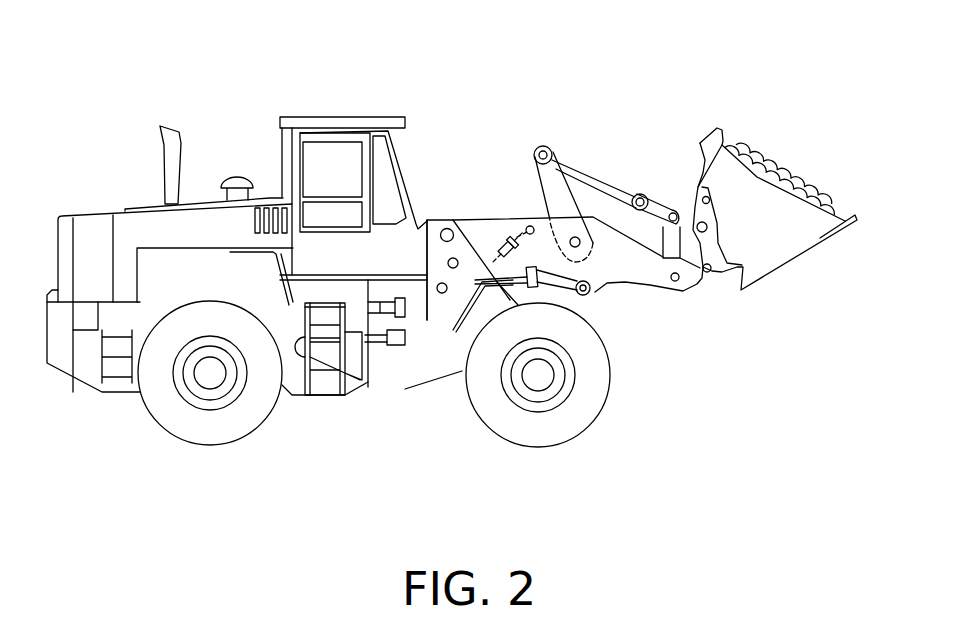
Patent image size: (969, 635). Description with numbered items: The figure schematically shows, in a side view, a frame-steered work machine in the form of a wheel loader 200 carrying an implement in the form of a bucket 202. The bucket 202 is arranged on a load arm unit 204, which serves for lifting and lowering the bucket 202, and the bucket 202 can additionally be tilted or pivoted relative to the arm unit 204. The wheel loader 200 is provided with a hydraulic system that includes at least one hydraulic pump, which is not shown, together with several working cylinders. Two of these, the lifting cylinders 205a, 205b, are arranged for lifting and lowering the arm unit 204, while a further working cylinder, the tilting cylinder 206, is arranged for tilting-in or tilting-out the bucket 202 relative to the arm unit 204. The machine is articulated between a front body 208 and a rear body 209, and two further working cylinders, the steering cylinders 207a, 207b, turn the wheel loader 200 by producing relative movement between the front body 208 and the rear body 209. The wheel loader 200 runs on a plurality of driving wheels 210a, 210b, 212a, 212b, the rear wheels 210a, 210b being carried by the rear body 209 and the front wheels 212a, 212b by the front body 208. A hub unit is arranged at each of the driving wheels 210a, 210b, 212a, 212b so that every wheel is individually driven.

The wheel loader 200 is at (266, 75).
The bucket 202 is at (763, 245).
The load arm unit 204 is at (649, 106).
The lifting cylinder 205a is at (632, 319).
The lifting cylinder 205b is at (560, 287).
The tilting cylinder 206 is at (502, 228).
The steering cylinder 207a is at (313, 401).
The steering cylinder 207b is at (417, 307).
The front body 208 is at (411, 372).
The rear body 209 is at (87, 362).
The driving wheel 210a is at (157, 415).
The driving wheel 210b is at (205, 374).
The driving wheel 212a is at (619, 395).
The driving wheel 212b is at (542, 375).